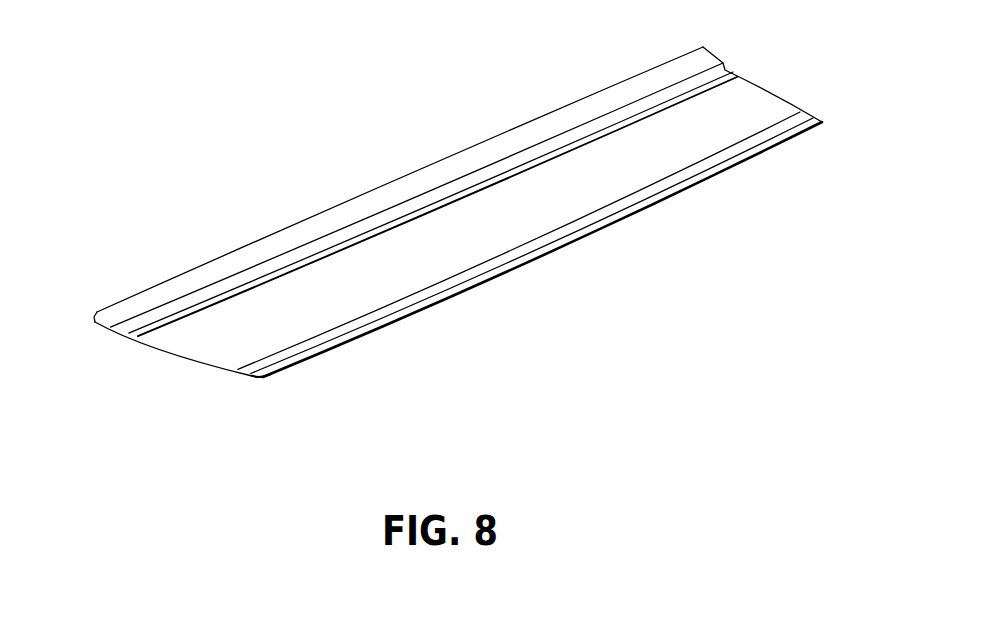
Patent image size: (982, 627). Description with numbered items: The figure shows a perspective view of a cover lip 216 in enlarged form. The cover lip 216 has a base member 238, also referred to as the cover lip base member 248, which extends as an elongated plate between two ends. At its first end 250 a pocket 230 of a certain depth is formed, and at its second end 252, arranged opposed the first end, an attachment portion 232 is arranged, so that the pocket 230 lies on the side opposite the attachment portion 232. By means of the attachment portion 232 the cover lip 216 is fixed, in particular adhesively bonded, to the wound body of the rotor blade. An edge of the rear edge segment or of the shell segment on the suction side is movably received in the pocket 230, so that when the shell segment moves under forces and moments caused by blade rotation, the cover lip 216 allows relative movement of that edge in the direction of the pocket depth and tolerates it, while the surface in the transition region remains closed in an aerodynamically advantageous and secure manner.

The cover lip 216 is at (214, 138).
The pocket 230 is at (103, 338).
The attachment portion 232 is at (296, 388).
The base member 238 is at (178, 385).
The cover lip base member 248 is at (436, 249).
The first end 250 is at (380, 160).
The second end 252 is at (502, 298).